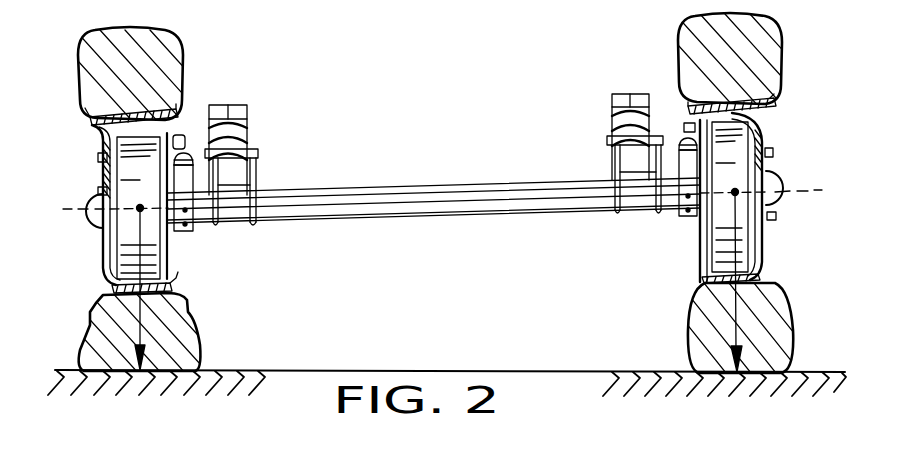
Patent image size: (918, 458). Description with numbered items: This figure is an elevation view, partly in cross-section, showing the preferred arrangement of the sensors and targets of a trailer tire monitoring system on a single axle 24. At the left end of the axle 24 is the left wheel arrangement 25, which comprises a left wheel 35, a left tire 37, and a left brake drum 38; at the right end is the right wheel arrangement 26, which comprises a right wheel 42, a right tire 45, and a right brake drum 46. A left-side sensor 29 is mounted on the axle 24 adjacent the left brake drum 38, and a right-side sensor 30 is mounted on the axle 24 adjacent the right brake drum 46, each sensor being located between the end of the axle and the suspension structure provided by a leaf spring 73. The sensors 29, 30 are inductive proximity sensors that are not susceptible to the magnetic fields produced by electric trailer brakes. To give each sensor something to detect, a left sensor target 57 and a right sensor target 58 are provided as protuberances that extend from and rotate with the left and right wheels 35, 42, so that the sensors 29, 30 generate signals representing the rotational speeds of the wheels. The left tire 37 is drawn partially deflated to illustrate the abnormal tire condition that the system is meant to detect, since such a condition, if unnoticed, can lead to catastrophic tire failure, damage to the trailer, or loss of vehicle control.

The axle 24 is at (428, 190).
The left wheel arrangement 25 is at (214, 45).
The right wheel arrangement 26 is at (628, 45).
The left-side sensor 29 is at (186, 138).
The right-side sensor 30 is at (683, 130).
The left wheel 35 is at (100, 143).
The left tire 37 is at (96, 32).
The left brake drum 38 is at (167, 256).
The right wheel 42 is at (765, 122).
The right tire 45 is at (780, 32).
The right brake drum 46 is at (707, 252).
The left sensor target 57 is at (158, 100).
The right sensor target 58 is at (683, 100).
The leaf spring 73 is at (262, 172).